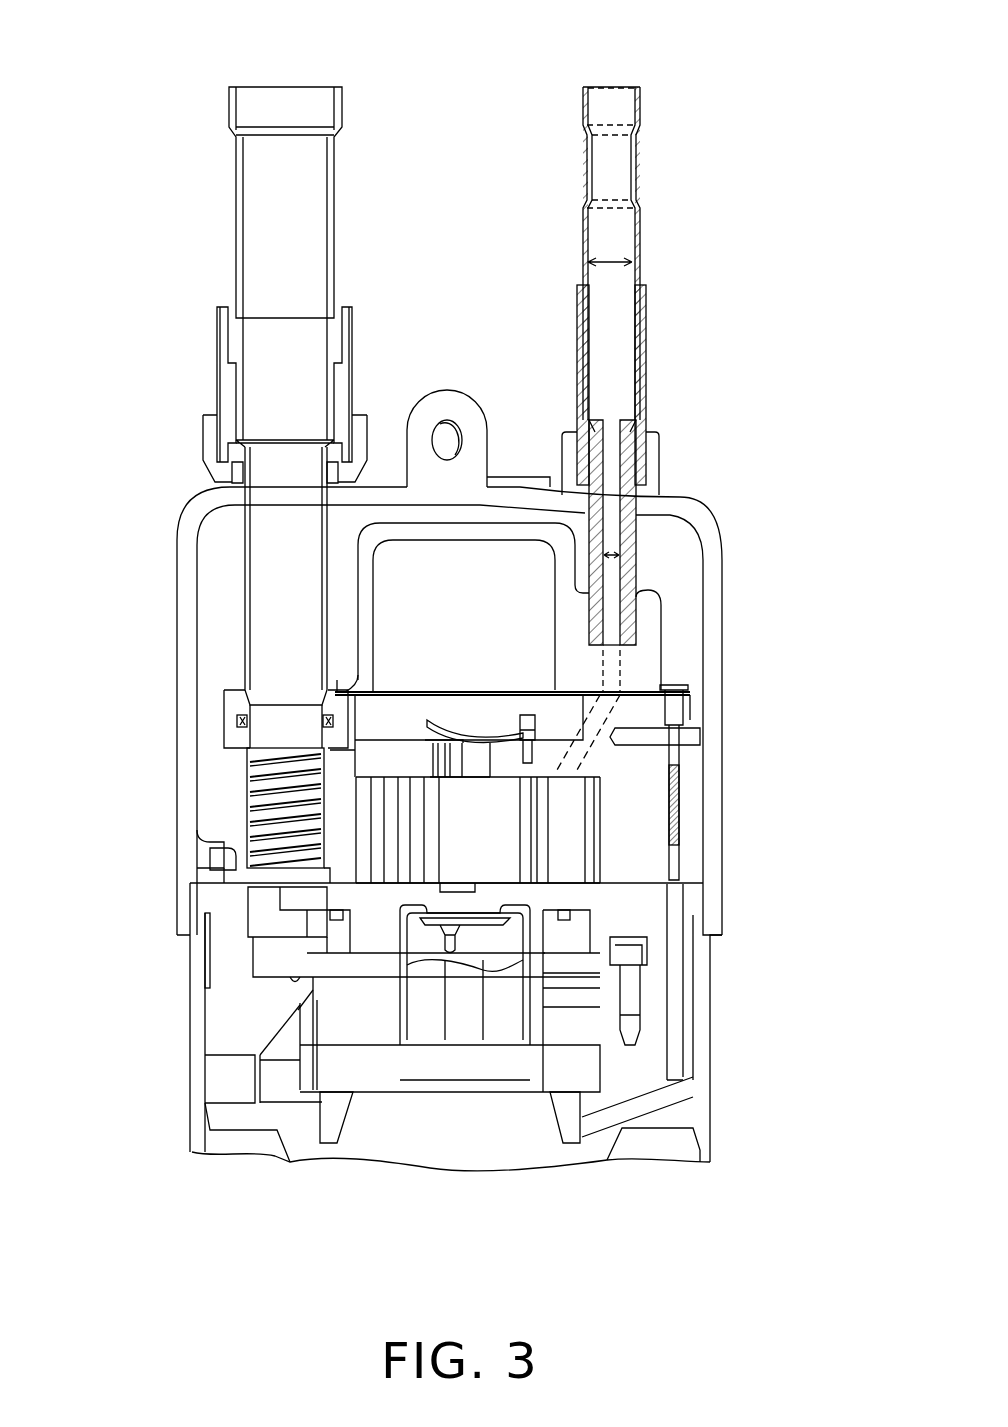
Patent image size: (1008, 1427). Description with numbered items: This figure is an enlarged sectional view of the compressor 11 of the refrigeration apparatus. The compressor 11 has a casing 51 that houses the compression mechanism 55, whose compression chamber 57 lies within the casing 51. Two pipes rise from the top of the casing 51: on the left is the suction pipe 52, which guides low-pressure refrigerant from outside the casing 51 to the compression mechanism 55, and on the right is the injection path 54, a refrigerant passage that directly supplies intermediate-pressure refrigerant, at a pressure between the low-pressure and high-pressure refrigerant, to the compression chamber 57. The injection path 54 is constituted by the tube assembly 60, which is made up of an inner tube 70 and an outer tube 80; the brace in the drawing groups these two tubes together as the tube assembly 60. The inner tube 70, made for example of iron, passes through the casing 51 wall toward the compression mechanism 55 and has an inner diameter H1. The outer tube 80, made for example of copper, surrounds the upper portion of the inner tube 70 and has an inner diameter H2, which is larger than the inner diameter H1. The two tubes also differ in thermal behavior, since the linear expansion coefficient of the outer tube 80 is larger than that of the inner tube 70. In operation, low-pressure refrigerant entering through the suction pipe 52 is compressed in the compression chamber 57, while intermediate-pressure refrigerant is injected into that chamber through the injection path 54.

The compressor 11 is at (170, 86).
The casing 51 is at (205, 508).
The suction pipe 52 is at (270, 208).
The injection path 54 is at (612, 165).
The compression mechanism 55 is at (630, 850).
The compression chamber 57 is at (568, 855).
The tube assembly 60 is at (770, 210).
The inner tube 70 is at (660, 480).
The outer tube 80 is at (642, 232).
The inner diameter of the inner tube H1 is at (615, 585).
The inner diameter of the outer tube H2 is at (585, 265).